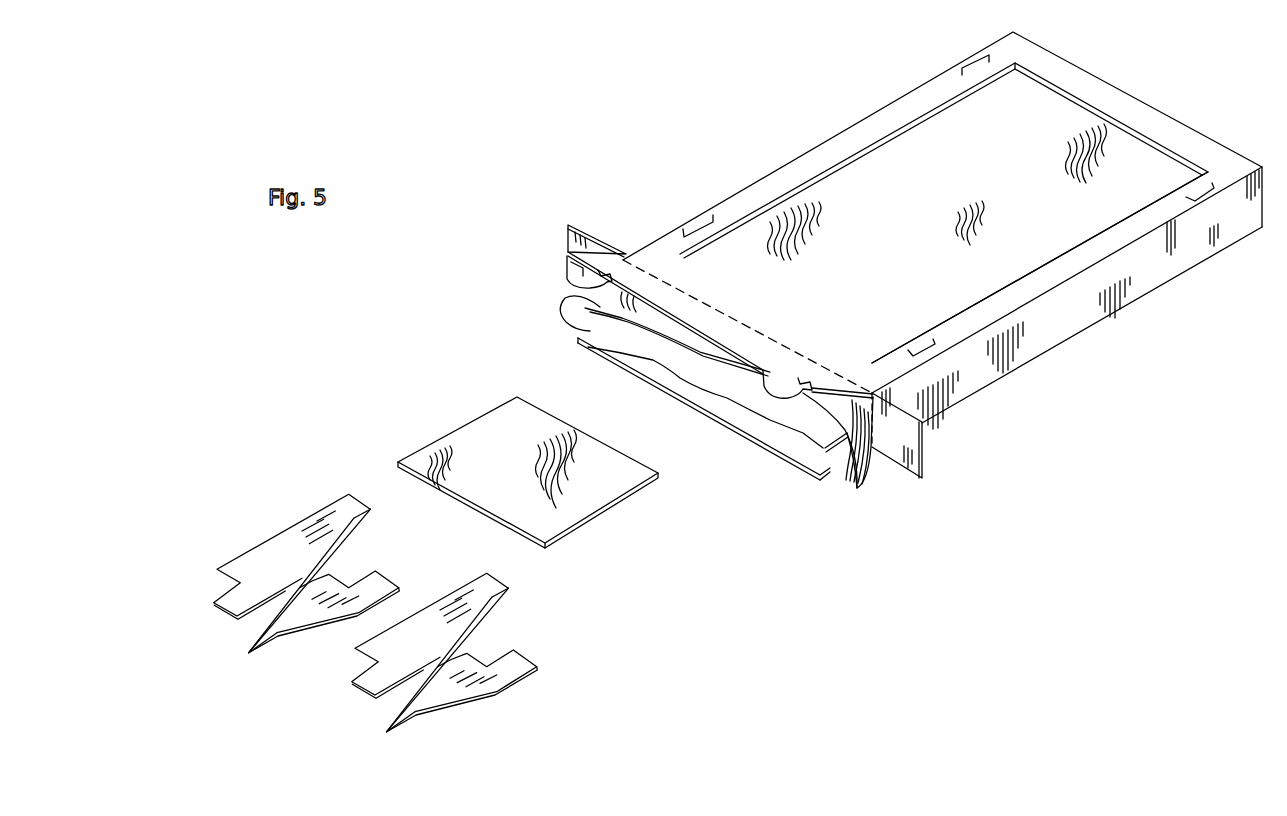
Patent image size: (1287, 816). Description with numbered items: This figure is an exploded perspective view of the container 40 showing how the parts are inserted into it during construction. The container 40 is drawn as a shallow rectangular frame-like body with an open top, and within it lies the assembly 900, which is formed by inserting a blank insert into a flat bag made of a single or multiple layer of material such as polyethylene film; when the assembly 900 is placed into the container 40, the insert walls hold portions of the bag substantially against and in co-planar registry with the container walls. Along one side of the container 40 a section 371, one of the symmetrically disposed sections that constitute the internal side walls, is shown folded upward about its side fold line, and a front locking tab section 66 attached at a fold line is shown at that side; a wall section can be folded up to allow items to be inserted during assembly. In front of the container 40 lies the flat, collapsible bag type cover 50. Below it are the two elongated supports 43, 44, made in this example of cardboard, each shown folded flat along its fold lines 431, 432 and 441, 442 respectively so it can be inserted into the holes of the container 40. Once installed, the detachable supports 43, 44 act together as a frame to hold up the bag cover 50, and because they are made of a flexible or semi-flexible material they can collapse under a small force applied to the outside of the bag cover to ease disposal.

The container 40 is at (1126, 316).
The assembly 900 is at (937, 192).
The section 371 is at (587, 341).
The front locking tab section 66 is at (800, 420).
The bag cover 50 is at (528, 472).
The elongated support 43 is at (282, 570).
The fold line 431 is at (347, 493).
The fold line 432 is at (222, 645).
The elongated support 44 is at (432, 650).
The fold line 441 is at (460, 650).
The fold line 442 is at (417, 691).